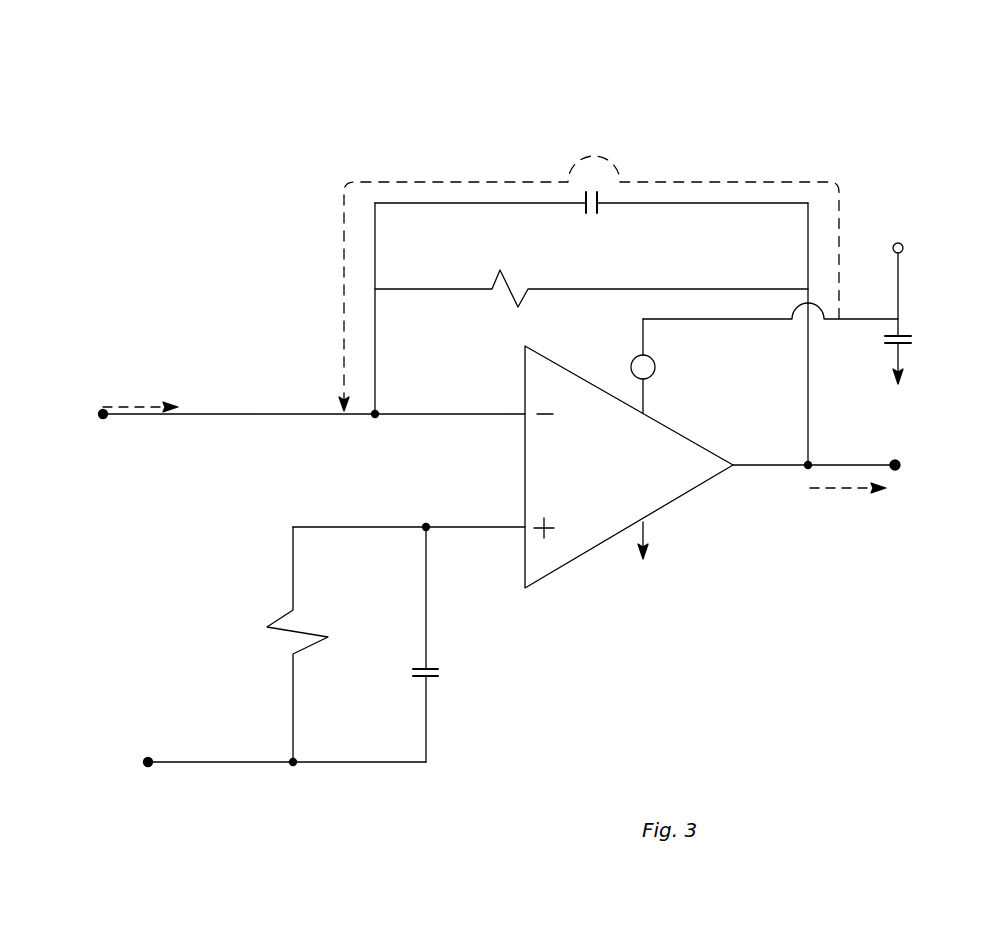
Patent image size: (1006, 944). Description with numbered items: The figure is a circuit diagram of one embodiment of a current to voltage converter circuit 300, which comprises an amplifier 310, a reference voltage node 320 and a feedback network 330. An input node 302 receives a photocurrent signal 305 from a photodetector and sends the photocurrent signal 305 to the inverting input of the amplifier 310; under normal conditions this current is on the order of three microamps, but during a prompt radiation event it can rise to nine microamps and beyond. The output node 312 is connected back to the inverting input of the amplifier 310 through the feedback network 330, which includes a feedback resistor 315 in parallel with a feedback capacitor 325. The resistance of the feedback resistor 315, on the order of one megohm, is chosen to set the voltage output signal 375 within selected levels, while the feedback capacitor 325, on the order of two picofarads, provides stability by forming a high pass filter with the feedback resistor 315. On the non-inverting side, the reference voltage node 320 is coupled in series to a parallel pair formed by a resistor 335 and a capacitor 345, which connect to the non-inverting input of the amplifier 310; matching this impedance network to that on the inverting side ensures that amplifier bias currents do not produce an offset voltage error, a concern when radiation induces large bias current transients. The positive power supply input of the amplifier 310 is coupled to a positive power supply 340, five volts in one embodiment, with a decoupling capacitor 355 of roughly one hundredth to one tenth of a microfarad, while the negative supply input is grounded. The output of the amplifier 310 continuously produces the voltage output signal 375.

The current to voltage converter circuit 300 is at (717, 114).
The input node 302 is at (100, 424).
The photocurrent signal 305 is at (128, 406).
The amplifier 310 is at (617, 476).
The output node 312 is at (900, 455).
The feedback resistor 315 is at (505, 296).
The reference voltage node 320 is at (142, 757).
The feedback capacitor 325 is at (598, 216).
The feedback network 330 is at (413, 183).
The resistor 335 is at (273, 620).
The positive power supply 340 is at (903, 242).
The capacitor 345 is at (413, 680).
The decoupling capacitor 355 is at (915, 337).
The voltage output signal 375 is at (832, 491).